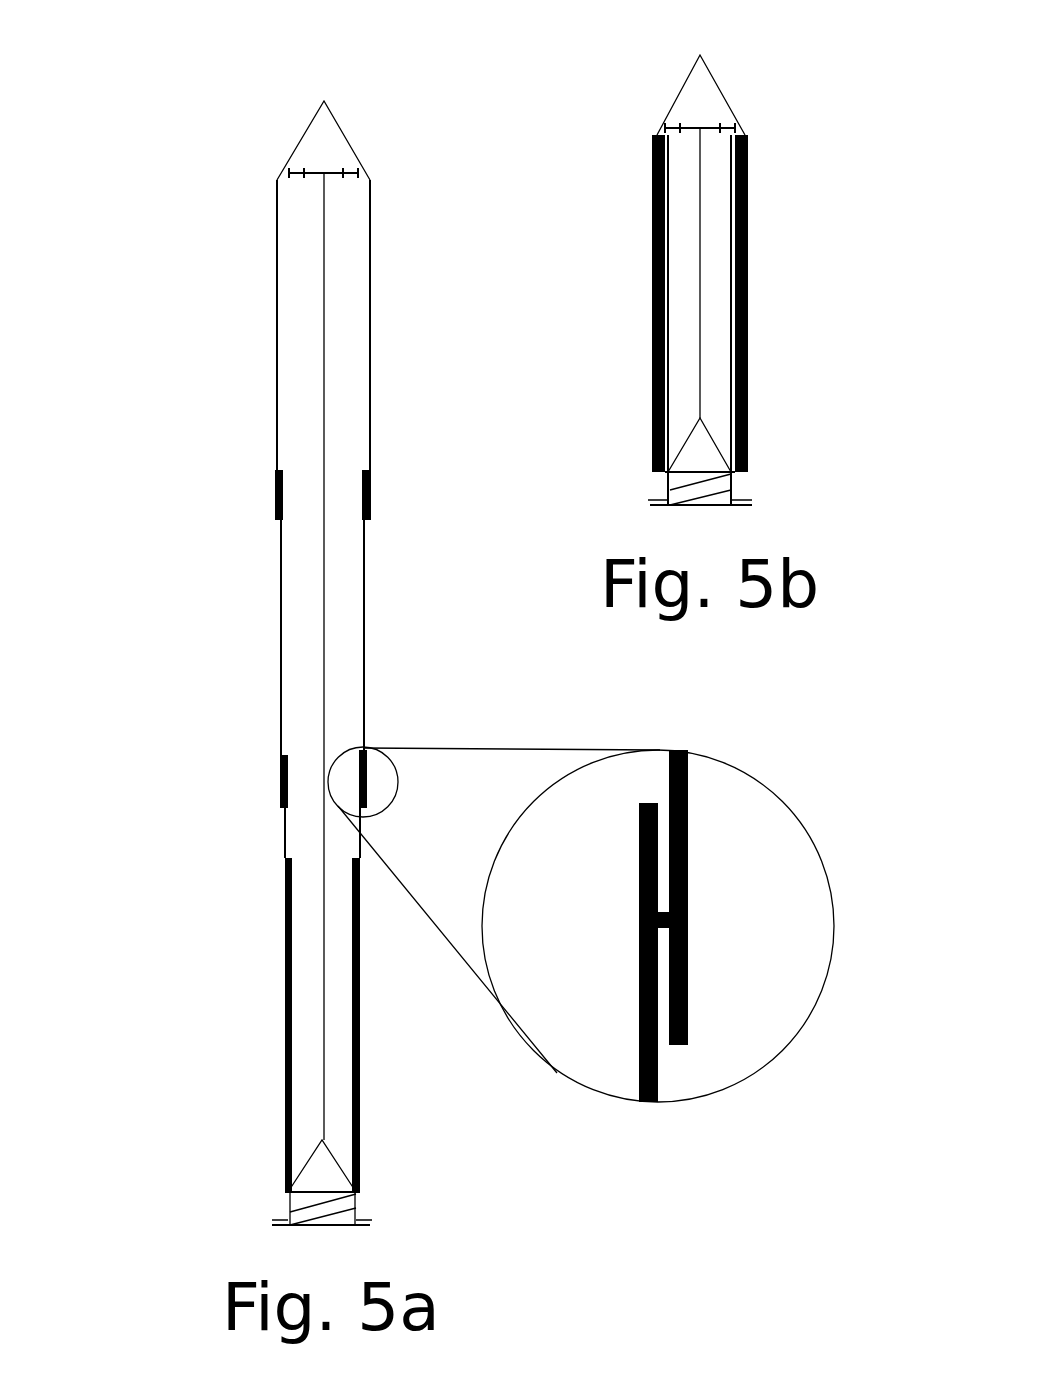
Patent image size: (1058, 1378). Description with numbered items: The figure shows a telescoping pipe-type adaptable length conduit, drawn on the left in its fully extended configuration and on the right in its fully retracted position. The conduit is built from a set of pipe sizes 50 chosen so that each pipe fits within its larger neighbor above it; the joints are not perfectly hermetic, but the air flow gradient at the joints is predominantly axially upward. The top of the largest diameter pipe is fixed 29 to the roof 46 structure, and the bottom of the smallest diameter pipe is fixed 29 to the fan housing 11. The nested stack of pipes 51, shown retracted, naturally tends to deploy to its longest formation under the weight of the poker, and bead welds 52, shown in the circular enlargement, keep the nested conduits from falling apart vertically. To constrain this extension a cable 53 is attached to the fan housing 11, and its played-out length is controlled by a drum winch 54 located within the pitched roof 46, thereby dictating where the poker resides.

In FIG. 5A, the fan housing 11 is at (355, 1210).
In FIG. 5B, the fan housing 11 is at (718, 487).
In FIG. 5A, the fixing 29 is at (274, 180).
In FIG. 5B, the roof 46 is at (677, 90).
In FIG. 5A, the pipe sizes 50 is at (280, 837).
In FIG. 5B, the nested stack of pipes 51 is at (752, 310).
In FIG. 5A, the bead welds 52 is at (690, 900).
In FIG. 5A, the cable 53 is at (320, 393).
In FIG. 5B, the drum winch 54 is at (707, 115).